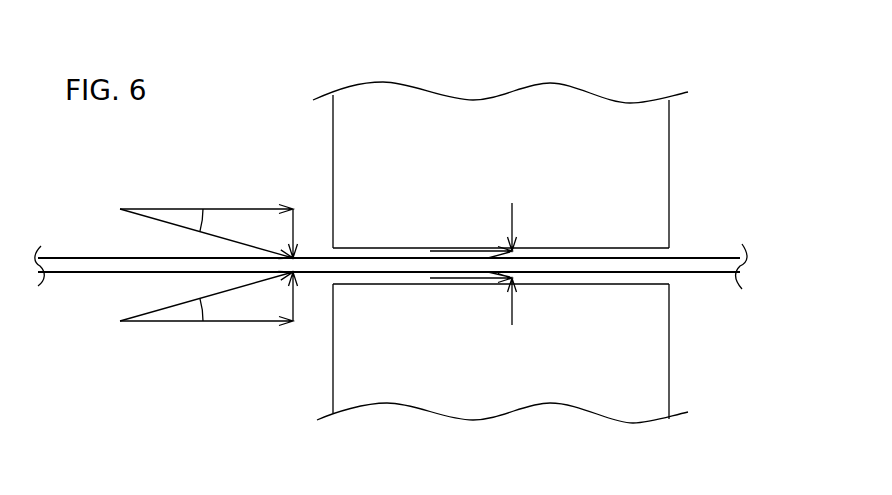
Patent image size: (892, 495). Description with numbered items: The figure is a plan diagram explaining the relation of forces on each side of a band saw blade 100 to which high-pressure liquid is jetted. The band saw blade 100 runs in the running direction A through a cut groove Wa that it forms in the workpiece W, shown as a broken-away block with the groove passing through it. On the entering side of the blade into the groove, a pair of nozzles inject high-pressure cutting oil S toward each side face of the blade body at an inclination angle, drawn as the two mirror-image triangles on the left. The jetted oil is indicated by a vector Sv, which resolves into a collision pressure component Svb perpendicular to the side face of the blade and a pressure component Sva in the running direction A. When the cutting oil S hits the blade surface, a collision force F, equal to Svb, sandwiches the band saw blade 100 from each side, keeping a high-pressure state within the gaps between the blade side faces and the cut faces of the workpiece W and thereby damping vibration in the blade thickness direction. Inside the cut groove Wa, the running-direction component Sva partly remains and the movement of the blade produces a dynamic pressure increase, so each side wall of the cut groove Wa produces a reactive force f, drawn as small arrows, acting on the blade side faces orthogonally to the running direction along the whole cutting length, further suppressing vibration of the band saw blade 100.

The workpiece W is at (669, 140).
The cut groove Wa is at (651, 247).
The band saw blade 100 is at (697, 262).
The running direction A is at (783, 262).
The high-pressure cutting oil S is at (467, 248).
The force f is at (518, 262).
The vector Sv is at (226, 237).
The pressure component Sva is at (238, 208).
The collision pressure component Svb is at (294, 212).
The collision force F is at (304, 265).